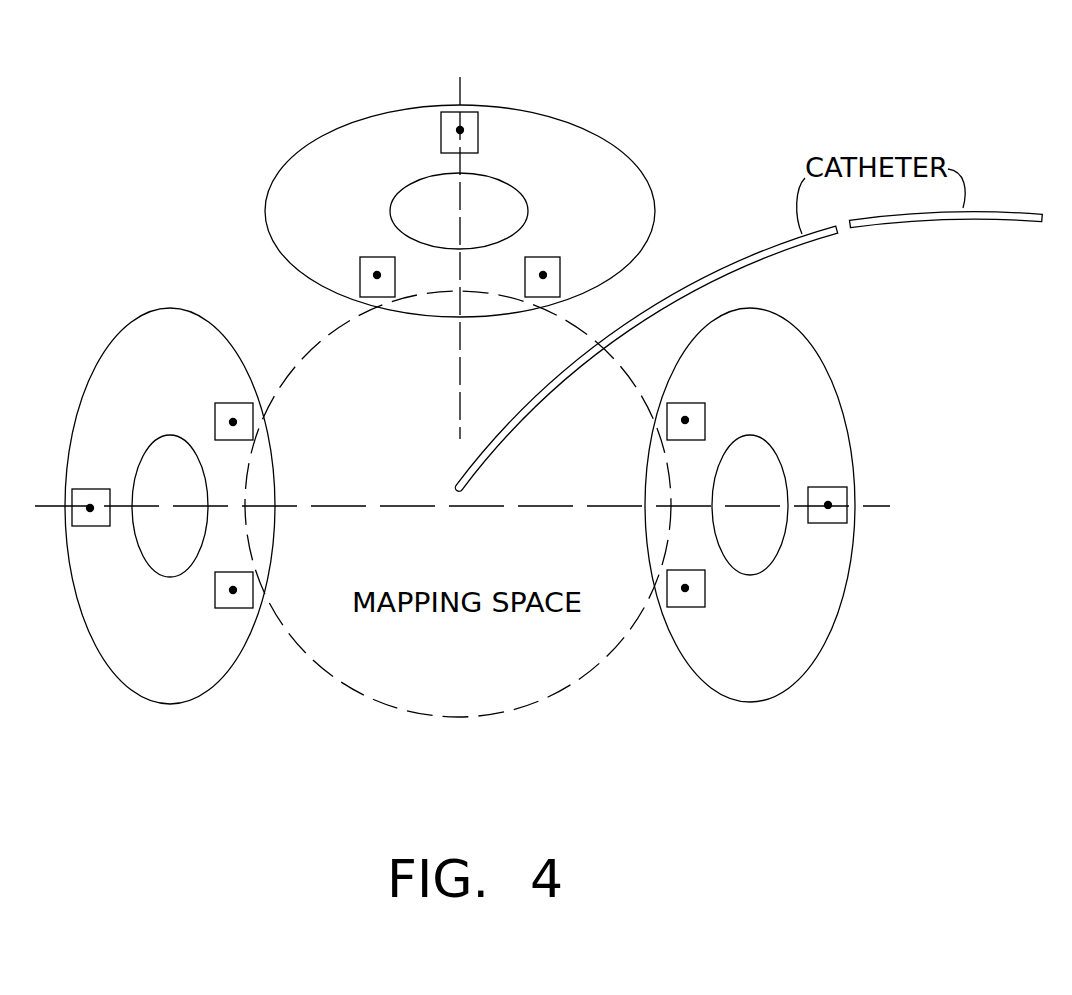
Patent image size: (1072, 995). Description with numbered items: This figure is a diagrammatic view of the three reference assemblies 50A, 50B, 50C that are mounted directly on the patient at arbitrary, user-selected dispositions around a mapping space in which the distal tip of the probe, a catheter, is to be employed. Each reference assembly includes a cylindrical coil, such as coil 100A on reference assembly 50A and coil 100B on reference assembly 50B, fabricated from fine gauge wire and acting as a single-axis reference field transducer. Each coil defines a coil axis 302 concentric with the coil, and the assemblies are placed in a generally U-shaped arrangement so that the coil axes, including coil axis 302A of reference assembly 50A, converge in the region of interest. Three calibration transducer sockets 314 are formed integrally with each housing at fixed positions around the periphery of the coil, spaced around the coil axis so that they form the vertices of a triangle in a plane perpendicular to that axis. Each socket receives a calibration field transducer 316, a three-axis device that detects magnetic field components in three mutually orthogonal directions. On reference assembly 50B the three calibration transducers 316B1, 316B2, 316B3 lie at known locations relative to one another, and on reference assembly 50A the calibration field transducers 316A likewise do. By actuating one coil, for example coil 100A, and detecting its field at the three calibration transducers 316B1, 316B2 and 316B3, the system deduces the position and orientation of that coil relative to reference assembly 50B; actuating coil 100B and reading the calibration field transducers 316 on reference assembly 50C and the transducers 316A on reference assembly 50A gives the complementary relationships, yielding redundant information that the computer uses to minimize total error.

The coil axis 302 is at (460, 80).
The coil axis of reference assembly 50A 302A is at (871, 498).
The reference assembly 50A is at (848, 416).
The reference assembly 50B is at (590, 125).
The reference assembly 50C is at (208, 692).
The coil 100A is at (743, 575).
The coil 100B is at (525, 197).
The calibration transducer socket 314 is at (680, 403).
The calibration field transducer 316 is at (233, 422).
The calibration field transducer 316A is at (685, 420).
The calibration transducer 316B1 is at (460, 130).
The calibration transducer 316B2 is at (377, 275).
The calibration transducer 316B3 is at (543, 275).